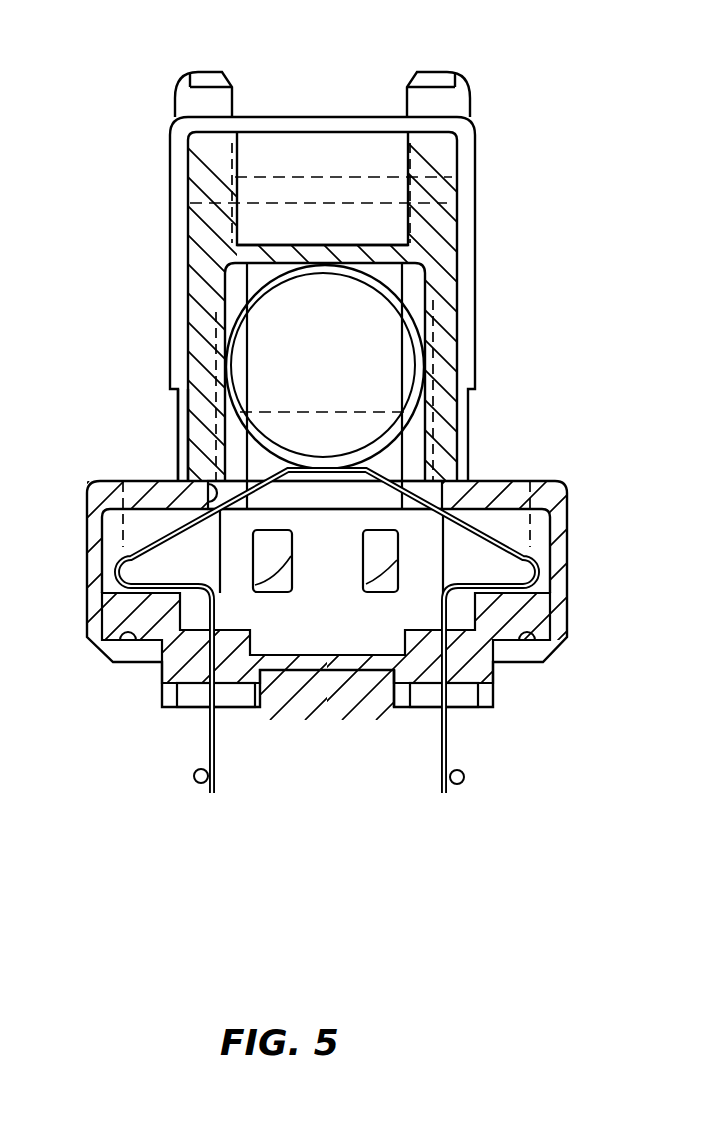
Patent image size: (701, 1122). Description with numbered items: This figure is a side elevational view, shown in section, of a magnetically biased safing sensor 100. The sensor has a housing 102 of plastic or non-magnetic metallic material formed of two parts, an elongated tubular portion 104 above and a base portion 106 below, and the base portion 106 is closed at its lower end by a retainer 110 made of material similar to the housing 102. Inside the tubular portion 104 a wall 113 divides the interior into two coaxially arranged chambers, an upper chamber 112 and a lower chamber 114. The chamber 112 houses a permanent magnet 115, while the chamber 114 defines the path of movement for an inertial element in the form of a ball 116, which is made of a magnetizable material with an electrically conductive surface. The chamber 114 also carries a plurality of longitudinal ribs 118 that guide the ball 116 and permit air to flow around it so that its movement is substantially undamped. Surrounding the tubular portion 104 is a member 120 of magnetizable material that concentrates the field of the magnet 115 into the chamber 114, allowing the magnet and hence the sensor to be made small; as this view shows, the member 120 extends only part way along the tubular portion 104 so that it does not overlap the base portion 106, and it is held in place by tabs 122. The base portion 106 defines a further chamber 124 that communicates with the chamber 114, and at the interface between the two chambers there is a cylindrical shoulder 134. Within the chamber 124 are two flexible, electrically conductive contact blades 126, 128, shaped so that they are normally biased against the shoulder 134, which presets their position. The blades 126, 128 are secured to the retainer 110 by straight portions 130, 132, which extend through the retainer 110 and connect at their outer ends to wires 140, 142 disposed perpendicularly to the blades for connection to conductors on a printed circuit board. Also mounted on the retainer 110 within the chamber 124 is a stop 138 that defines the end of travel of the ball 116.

The safing sensor 100 is at (538, 118).
The housing 102 is at (168, 263).
The elongated tubular portion 104 is at (212, 468).
The base portion 106 is at (568, 590).
The retainer 110 is at (495, 690).
The chamber 112 is at (462, 180).
The wall 113 is at (278, 252).
The chamber 114 is at (425, 428).
The permanent magnet 115 is at (330, 153).
The ball 116 is at (256, 316).
The longitudinal ribs 118 is at (233, 422).
The member 120 is at (425, 350).
The tabs 122 is at (433, 97).
The chamber 124 is at (120, 548).
The contact blade 126 is at (455, 527).
The contact blade 128 is at (248, 632).
The straight portion 130 is at (447, 723).
The straight portion 132 is at (216, 737).
The cylindrical shoulder 134 is at (210, 488).
The stop 138 is at (325, 597).
The wire 140 is at (201, 783).
The wire 142 is at (459, 785).